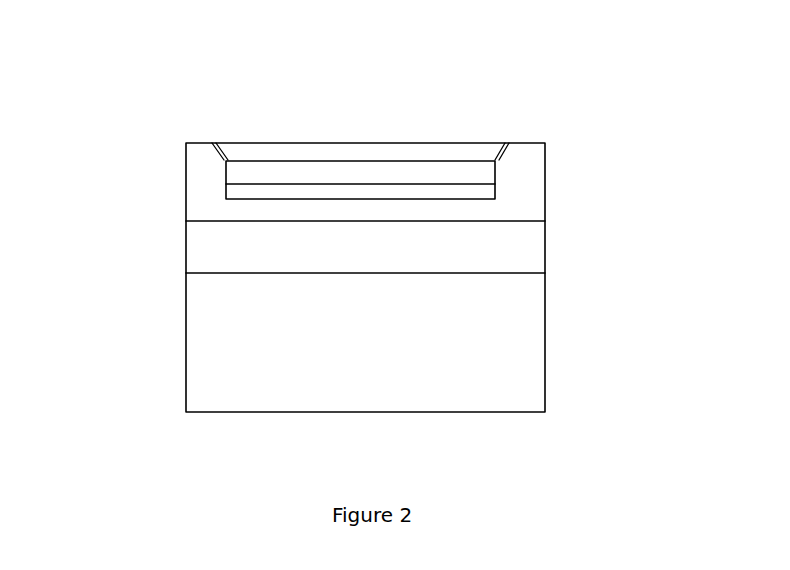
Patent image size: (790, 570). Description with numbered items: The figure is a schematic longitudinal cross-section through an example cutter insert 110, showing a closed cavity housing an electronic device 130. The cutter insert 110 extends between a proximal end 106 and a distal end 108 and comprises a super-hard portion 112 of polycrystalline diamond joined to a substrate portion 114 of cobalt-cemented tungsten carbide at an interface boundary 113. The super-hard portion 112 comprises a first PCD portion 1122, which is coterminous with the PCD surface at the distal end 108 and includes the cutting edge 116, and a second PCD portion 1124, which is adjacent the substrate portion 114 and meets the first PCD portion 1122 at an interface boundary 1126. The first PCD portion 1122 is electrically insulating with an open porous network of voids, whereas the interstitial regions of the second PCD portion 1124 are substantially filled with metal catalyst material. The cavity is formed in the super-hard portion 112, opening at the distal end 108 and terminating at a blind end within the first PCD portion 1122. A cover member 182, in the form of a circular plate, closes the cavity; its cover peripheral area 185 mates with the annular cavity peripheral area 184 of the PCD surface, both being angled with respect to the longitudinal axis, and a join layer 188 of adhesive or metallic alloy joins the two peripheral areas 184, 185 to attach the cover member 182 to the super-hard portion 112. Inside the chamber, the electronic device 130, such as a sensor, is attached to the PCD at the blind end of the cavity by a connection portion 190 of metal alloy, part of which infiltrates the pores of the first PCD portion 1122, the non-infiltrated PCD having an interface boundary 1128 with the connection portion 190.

The cutter insert 110 is at (252, 90).
The distal end 108 is at (533, 135).
The proximal end 106 is at (527, 418).
The electronic device 130 is at (303, 175).
The cover member 182 is at (383, 153).
The cavity peripheral area 184 is at (499, 153).
The cover peripheral area 185 is at (493, 150).
The join layer 188 is at (223, 150).
The connection portion 190 is at (232, 192).
The cutting edge 116 is at (186, 143).
The super-hard portion 112 is at (525, 259).
The first PCD portion 1122 is at (527, 185).
The second PCD portion 1124 is at (527, 240).
The substrate portion 114 is at (527, 338).
The interface boundary 113 is at (331, 287).
The interface boundary 1126 is at (302, 235).
The interface boundary 1128 is at (256, 213).